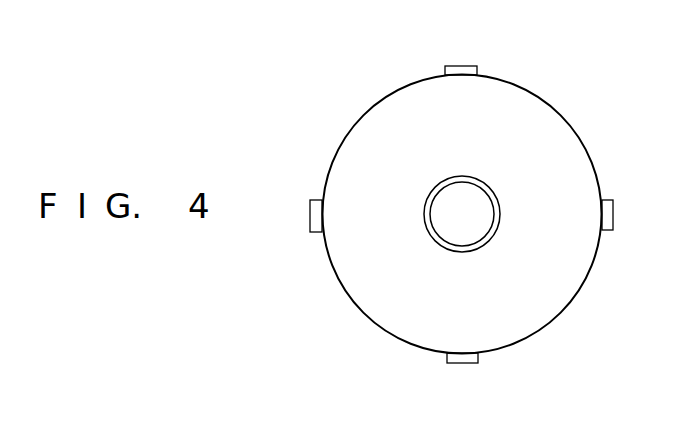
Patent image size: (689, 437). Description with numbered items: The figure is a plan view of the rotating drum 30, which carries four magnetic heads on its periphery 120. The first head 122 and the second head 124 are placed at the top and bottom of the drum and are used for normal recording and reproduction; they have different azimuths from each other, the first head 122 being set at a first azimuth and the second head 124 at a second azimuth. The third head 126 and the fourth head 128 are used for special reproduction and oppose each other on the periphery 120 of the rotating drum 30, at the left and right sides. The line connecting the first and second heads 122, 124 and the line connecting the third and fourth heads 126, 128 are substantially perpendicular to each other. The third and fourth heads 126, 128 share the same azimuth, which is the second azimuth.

The periphery 120 is at (565, 117).
The rotating drum 30 is at (566, 301).
The first head 122 is at (463, 66).
The second head 124 is at (465, 364).
The third head 126 is at (312, 200).
The fourth head 128 is at (606, 200).